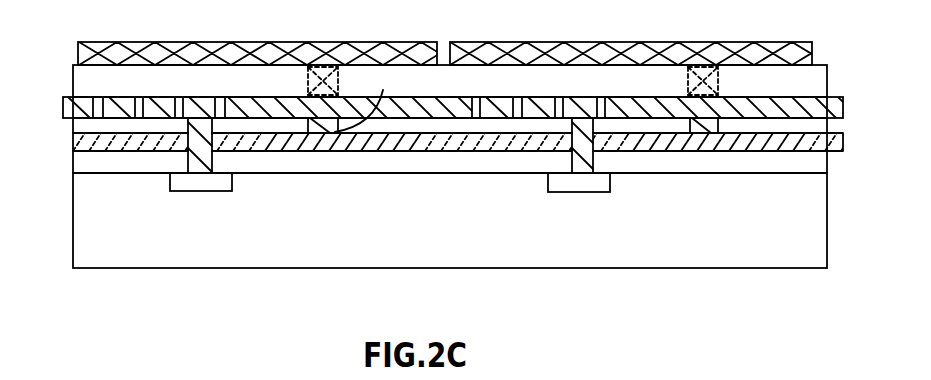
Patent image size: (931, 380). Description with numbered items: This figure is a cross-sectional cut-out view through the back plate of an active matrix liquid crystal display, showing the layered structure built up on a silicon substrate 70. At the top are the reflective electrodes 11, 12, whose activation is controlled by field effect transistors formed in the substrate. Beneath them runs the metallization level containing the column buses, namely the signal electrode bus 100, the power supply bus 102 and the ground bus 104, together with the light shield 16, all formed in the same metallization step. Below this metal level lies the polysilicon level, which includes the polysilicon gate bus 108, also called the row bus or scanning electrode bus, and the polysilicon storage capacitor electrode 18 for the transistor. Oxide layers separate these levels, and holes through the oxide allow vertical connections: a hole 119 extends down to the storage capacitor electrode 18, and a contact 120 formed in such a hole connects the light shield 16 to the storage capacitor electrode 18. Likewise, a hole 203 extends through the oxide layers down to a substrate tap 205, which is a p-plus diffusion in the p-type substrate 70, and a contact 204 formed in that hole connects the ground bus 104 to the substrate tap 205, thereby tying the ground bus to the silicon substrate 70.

The reflective electrode 11 is at (137, 43).
The reflective electrode 12 is at (522, 53).
The light shield 16 is at (407, 118).
The polysilicon storage capacitor electrode 18 is at (260, 140).
The silicon substrate 70 is at (187, 253).
The signal electrode bus 100 is at (120, 103).
The power supply bus 102 is at (162, 103).
The ground bus 104 is at (192, 103).
The polysilicon gate bus 108 is at (135, 140).
The third plurality of holes 119 is at (367, 102).
The contact 120 is at (309, 119).
The fourth plurality of holes 203 is at (212, 158).
The contact 204 is at (188, 146).
The substrate tap 205 is at (212, 189).